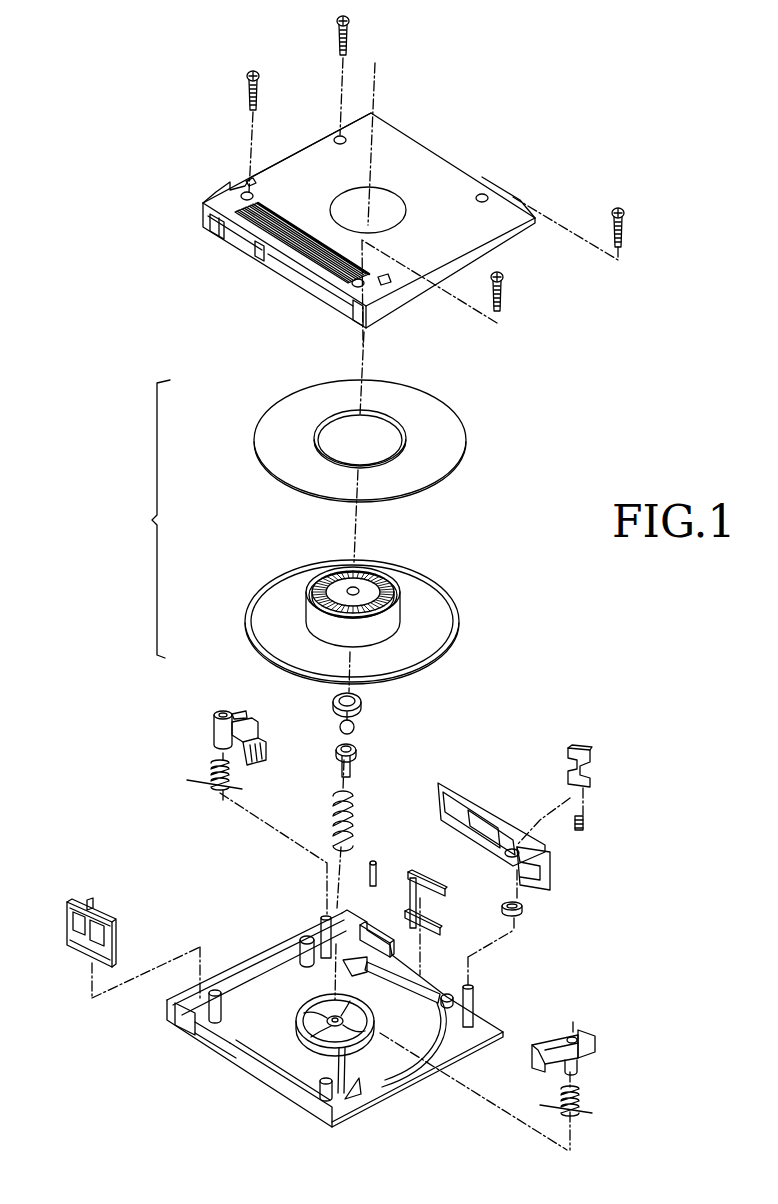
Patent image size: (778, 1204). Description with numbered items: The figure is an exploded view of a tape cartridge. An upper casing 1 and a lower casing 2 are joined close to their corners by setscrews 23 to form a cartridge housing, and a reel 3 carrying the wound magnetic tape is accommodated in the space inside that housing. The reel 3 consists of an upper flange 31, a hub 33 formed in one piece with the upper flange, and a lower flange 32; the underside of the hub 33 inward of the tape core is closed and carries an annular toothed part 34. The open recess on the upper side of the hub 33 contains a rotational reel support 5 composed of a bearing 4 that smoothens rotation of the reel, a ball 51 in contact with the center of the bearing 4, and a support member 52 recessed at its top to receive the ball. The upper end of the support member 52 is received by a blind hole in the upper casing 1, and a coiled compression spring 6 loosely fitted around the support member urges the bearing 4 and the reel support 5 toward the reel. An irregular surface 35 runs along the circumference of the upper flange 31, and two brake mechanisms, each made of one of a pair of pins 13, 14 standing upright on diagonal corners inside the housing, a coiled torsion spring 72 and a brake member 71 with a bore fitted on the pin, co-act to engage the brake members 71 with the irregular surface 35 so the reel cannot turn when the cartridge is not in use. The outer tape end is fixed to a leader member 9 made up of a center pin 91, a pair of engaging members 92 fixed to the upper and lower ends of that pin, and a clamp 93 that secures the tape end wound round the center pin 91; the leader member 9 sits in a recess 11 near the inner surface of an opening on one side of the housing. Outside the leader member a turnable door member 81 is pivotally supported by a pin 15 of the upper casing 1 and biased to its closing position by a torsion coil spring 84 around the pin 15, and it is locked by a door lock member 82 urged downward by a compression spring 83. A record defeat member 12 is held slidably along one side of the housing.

The upper casing 1 is at (268, 1082).
The lower casing 2 is at (215, 201).
The reel 3 is at (325, 532).
The bearing 4 is at (333, 702).
The rotational reel support 5 is at (346, 742).
The coiled compression spring 6 is at (334, 801).
The leader member 9 is at (421, 906).
The recess 11 is at (400, 977).
The record defeat member 12 is at (73, 902).
The pin 13 is at (320, 917).
The pin 14 is at (351, 1066).
The pin 15 is at (477, 991).
The setscrews 23 is at (349, 38).
The upper flange 31 is at (351, 609).
The lower flange 32 is at (286, 436).
The hub 33 is at (400, 608).
The annular toothed part 34 is at (366, 582).
The irregular surface 35 is at (461, 637).
The ball 51 is at (340, 727).
The support member 52 is at (340, 759).
The brake member 71 is at (214, 716).
The coiled torsion spring 72 is at (210, 773).
The door member 81 is at (485, 820).
The door lock member 82 is at (588, 749).
The compression spring 83 is at (586, 825).
The torsion coil spring 84 is at (520, 912).
The center pin 91 is at (416, 898).
The engaging members 92 is at (445, 891).
The clamp 93 is at (370, 869).